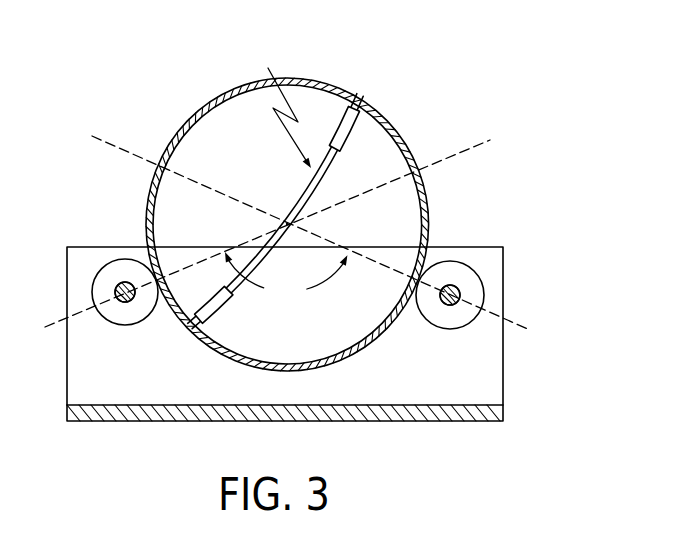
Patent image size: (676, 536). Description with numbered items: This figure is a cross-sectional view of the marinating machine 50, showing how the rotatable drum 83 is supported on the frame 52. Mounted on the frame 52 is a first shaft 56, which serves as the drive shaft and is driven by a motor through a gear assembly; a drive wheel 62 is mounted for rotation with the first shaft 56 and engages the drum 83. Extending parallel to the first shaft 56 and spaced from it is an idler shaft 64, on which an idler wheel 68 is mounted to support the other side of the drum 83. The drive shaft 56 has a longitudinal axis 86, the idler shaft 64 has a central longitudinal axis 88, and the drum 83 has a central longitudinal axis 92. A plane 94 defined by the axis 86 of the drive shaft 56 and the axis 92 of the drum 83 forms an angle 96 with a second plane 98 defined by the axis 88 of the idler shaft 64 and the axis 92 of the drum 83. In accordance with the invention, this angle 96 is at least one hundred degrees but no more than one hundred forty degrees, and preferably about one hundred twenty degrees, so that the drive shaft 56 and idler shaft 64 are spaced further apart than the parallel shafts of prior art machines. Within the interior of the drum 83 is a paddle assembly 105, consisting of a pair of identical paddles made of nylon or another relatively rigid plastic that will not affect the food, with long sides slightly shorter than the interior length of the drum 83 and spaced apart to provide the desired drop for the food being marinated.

The marinating machine 50 is at (300, 228).
The frame 52 is at (504, 366).
The first shaft 56 is at (115, 289).
The drive wheel 62 is at (104, 264).
The idler shaft 64 is at (463, 298).
The idler wheel 68 is at (477, 268).
The drum 83 is at (344, 81).
The longitudinal axis 86 is at (127, 302).
The central longitudinal axis 88 is at (451, 305).
The central longitudinal axis 92 is at (284, 222).
The plane 94 is at (464, 150).
The angle 96 is at (286, 281).
The second plane 98 is at (119, 147).
The paddle assembly 105 is at (271, 102).